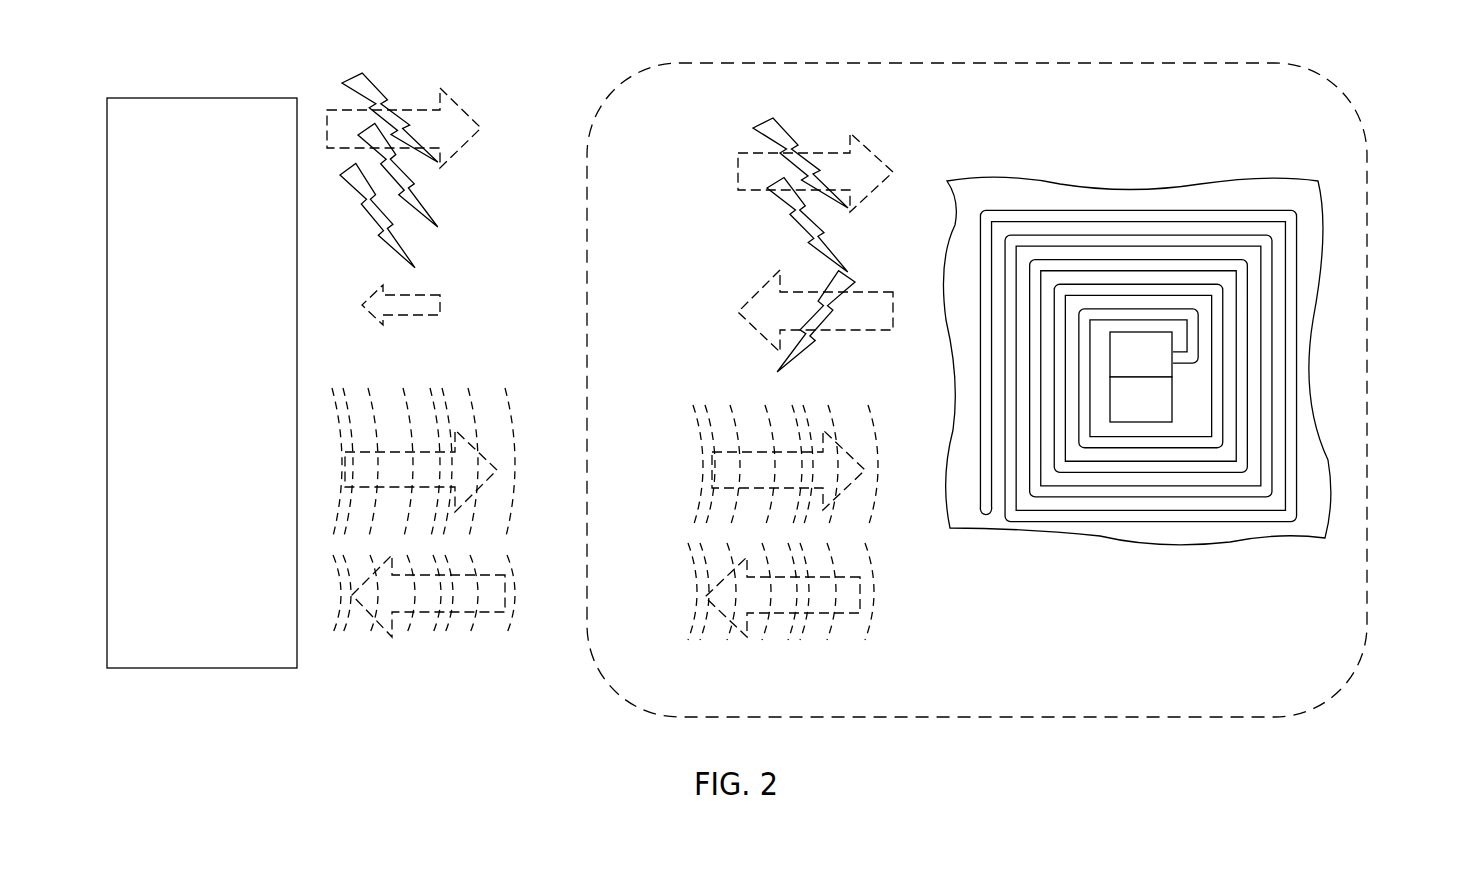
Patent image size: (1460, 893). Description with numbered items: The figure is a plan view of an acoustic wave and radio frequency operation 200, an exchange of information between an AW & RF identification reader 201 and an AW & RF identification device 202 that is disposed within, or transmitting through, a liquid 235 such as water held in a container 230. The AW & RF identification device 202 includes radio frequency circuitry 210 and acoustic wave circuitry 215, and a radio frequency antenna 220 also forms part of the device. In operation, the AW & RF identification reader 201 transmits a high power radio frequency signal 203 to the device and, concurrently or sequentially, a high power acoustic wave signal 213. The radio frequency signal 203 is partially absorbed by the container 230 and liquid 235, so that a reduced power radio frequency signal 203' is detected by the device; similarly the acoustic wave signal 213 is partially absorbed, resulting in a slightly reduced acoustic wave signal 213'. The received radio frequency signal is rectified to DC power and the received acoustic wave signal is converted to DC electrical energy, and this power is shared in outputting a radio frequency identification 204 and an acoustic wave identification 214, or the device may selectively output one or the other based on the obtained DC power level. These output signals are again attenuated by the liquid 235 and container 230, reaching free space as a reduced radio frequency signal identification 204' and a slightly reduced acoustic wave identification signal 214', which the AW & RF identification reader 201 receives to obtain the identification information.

The acoustic wave and radio frequency operation 200 is at (285, 25).
The AW & RF identification reader 201 is at (222, 440).
The AW & RF identification device 202 is at (1205, 165).
The high power radio frequency signal 203 is at (432, 143).
The reduced power radio frequency signal 203' is at (846, 192).
The radio frequency identification 204 is at (780, 317).
The reduced radio frequency signal identification 204' is at (446, 305).
The radio frequency circuitry 210 is at (1122, 369).
The high power acoustic wave signal 213 is at (454, 464).
The slightly reduced acoustic wave signal 213' is at (817, 466).
The acoustic wave identification 214 is at (804, 614).
The slightly reduced acoustic wave identification signal 214' is at (443, 621).
The acoustic wave circuitry 215 is at (1122, 410).
The radio frequency antenna 220 is at (1268, 522).
The container 230 is at (1165, 717).
The liquid 235 is at (1313, 647).